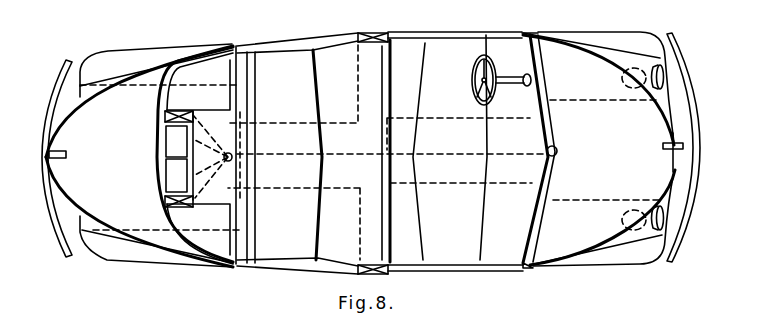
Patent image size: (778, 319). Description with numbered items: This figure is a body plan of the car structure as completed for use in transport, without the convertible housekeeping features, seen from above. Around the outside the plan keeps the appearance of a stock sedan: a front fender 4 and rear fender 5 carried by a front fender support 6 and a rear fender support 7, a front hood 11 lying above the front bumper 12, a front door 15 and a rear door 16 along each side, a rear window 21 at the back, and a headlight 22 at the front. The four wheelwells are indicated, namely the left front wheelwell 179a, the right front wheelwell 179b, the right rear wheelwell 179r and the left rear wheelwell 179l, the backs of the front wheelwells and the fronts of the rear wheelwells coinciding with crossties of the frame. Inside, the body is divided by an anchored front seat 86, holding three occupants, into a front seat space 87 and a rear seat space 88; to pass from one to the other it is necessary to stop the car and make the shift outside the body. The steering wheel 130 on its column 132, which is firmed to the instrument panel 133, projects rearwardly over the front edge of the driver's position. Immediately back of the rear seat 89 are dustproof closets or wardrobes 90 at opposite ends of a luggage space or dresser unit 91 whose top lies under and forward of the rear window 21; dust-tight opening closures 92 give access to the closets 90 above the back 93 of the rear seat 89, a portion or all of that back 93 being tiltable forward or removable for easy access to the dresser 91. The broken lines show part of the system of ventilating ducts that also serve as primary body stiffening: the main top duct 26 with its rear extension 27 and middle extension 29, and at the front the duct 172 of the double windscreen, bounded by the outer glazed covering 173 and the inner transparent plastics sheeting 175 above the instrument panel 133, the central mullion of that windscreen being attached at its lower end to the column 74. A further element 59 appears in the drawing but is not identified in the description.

The front fender 4 is at (628, 255).
The rear fender 5 is at (156, 70).
The front fender support 6 is at (661, 203).
The rear fender support 7 is at (81, 98).
The front hood 11 is at (585, 227).
The front bumper 12 is at (113, 175).
The front door 15 is at (521, 31).
The rear door 16 is at (265, 42).
The rear window 21 is at (172, 140).
The headlight 22 is at (664, 78).
The main top duct 26 is at (322, 130).
The rear extension 27 is at (166, 116).
The middle extension 29 is at (371, 38).
The pivot 59 is at (232, 156).
The column 74 is at (557, 156).
The front seat 86 is at (398, 174).
The front seat space 87 is at (519, 181).
The rear seat space 88 is at (362, 183).
The rear seat 89 is at (318, 175).
The closets 90 is at (215, 104).
The dresser unit 91 is at (200, 165).
The opening closures 92 is at (241, 78).
The back 93 is at (245, 97).
The steering wheel 130 is at (477, 91).
The column 132 is at (511, 86).
The instrument panel 133 is at (511, 135).
The duct 172 is at (554, 139).
The covering 173 is at (546, 93).
The transparent plastics sheeting 175 is at (534, 207).
The left front wheelwell 179a is at (590, 98).
The right front wheelwell 179b is at (590, 206).
The left rear wheelwell 179l is at (153, 84).
The right rear wheelwell 179r is at (149, 233).